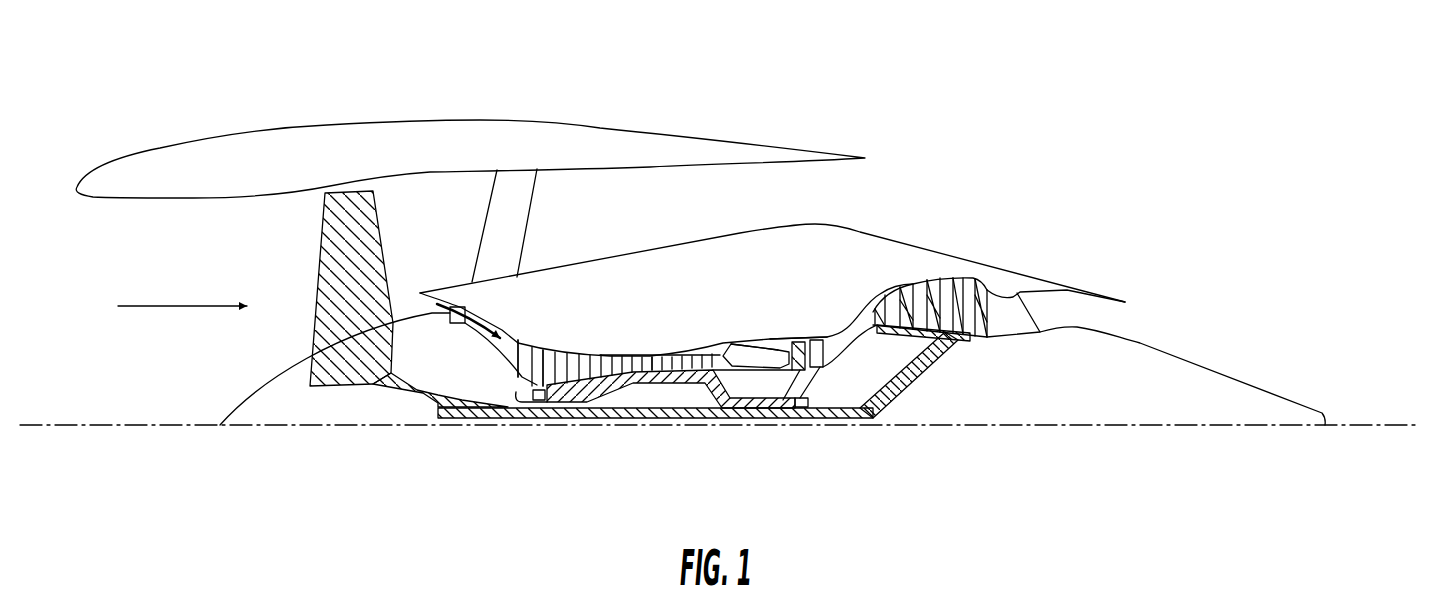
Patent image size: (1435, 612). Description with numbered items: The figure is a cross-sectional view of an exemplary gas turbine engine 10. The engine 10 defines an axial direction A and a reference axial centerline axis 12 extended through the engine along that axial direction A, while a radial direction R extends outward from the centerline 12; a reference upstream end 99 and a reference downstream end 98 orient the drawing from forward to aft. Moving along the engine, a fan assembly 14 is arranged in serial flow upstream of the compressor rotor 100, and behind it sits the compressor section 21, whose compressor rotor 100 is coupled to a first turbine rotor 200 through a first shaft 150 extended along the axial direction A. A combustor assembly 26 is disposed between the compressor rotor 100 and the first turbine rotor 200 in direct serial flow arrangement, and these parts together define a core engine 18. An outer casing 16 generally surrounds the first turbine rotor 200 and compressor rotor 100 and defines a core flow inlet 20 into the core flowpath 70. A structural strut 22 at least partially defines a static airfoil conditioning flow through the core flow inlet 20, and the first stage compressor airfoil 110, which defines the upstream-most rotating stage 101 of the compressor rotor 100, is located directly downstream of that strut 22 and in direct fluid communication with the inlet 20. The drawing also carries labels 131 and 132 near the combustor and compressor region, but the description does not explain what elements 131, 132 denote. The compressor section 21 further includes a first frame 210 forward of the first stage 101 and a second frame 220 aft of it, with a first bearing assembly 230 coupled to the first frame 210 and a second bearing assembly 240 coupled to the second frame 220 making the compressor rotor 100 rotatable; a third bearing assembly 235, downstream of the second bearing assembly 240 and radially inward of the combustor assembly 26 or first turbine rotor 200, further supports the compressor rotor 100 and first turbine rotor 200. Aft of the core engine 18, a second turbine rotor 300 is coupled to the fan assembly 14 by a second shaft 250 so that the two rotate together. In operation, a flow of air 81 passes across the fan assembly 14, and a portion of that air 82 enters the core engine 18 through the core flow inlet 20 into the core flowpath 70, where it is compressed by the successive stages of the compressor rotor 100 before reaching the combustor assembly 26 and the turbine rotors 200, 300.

The gas turbine engine 10 is at (812, 85).
The axial centerline axis 12 is at (1363, 425).
The fan assembly 14 is at (310, 260).
The outer casing 16 is at (785, 265).
The core engine 18 is at (698, 295).
The core flow inlet 20 is at (413, 300).
The compressor section 21 is at (638, 282).
The structural strut 22 is at (478, 323).
The combustor assembly 26 is at (780, 333).
The core flowpath 70 is at (527, 357).
The flow of air 81 is at (167, 307).
The flow of air 82 is at (450, 318).
The downstream end 98 is at (1278, 350).
The upstream end 99 is at (90, 371).
The compressor rotor 100 is at (680, 333).
The first stage 101 is at (572, 343).
The first stage compressor airfoil 110 is at (573, 345).
The combustor liner 131 is at (731, 344).
The compressor rotor blade 132 is at (553, 370).
The first shaft 150 is at (793, 400).
The first turbine rotor 200 is at (798, 337).
The first frame 210 is at (538, 340).
The second frame 220 is at (650, 350).
The first bearing assembly 230 is at (523, 395).
The third bearing assembly 235 is at (780, 403).
The second bearing assembly 240 is at (630, 377).
The second shaft 250 is at (853, 413).
The second turbine rotor 300 is at (945, 292).
The axial direction A is at (843, 503).
The radial direction R is at (1343, 338).